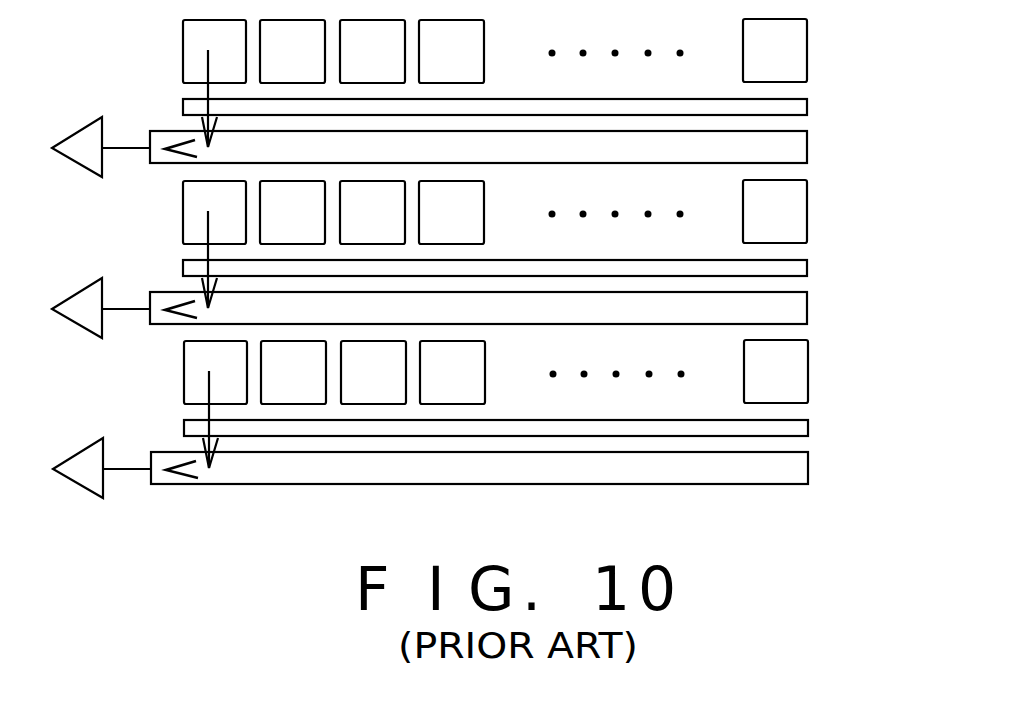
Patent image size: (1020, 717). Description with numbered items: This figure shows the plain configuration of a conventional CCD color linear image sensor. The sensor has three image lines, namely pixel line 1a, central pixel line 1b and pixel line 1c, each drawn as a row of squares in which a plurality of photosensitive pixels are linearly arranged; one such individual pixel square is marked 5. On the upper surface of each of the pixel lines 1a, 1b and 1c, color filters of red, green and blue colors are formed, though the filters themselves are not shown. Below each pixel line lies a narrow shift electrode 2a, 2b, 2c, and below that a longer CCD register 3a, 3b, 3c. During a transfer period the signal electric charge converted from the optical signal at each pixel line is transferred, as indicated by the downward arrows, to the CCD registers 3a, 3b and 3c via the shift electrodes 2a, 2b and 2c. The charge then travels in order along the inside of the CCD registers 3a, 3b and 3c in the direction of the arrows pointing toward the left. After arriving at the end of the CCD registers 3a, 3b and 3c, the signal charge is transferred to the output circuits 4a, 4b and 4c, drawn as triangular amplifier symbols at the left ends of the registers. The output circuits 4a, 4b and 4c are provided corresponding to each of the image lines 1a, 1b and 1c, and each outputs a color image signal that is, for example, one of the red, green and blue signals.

The pixel line 1a is at (505, 48).
The central pixel line 1b is at (539, 211).
The pixel line 1c is at (539, 371).
The shift electrode 2a is at (807, 103).
The shift electrode 2b is at (544, 260).
The shift electrode 2c is at (544, 419).
The CCD register 3a is at (807, 145).
The CCD register 3b is at (528, 267).
The CCD register 3c is at (528, 427).
The output circuit 4a is at (75, 143).
The output circuit 4b is at (101, 282).
The output circuit 4c is at (102, 441).
The photoelectric conversion element (pixel) 5 is at (183, 31).